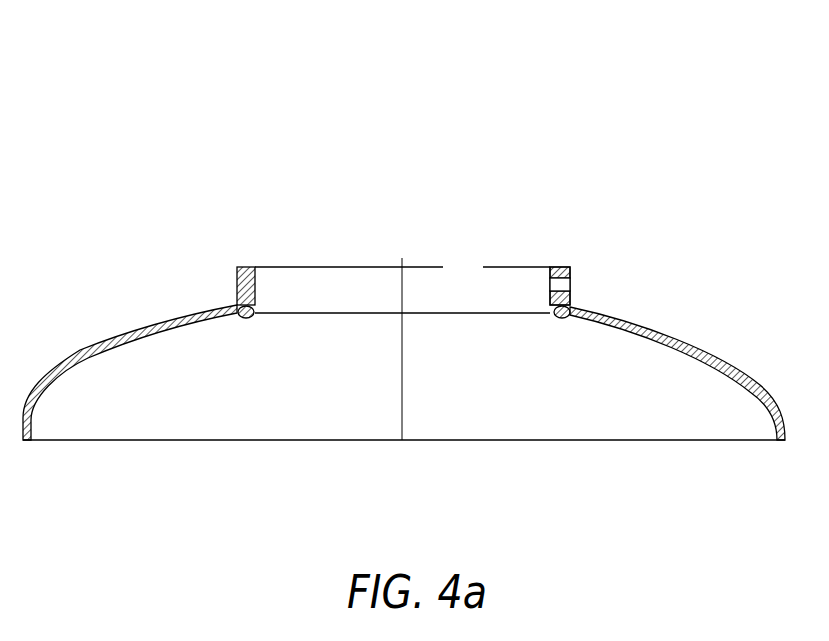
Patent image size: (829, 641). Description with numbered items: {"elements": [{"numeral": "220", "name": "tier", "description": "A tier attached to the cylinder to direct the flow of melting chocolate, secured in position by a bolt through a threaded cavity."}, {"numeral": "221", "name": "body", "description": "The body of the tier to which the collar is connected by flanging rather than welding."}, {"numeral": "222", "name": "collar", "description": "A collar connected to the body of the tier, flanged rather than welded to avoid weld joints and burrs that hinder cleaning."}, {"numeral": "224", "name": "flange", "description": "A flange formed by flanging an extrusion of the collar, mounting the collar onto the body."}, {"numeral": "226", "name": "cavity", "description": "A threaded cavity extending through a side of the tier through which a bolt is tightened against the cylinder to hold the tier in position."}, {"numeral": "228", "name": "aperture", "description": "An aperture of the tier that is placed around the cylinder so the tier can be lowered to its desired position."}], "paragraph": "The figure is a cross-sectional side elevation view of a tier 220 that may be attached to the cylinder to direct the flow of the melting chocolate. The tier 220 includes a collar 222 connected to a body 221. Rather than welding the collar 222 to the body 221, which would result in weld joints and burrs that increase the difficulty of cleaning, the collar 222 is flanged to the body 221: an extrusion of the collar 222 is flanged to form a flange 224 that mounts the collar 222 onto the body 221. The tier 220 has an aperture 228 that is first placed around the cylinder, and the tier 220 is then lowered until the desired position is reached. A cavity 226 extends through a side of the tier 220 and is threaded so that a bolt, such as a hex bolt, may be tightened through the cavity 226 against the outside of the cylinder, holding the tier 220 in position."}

The closure cap assembly 220 is at (416, 272).
The dome-shaped shell wall 221 is at (670, 330).
The neck collar wall 222 is at (235, 288).
The bead at shell-collar junction 224 is at (245, 318).
The aperture in collar wall 226 is at (592, 283).
The neck opening 228 is at (449, 282).